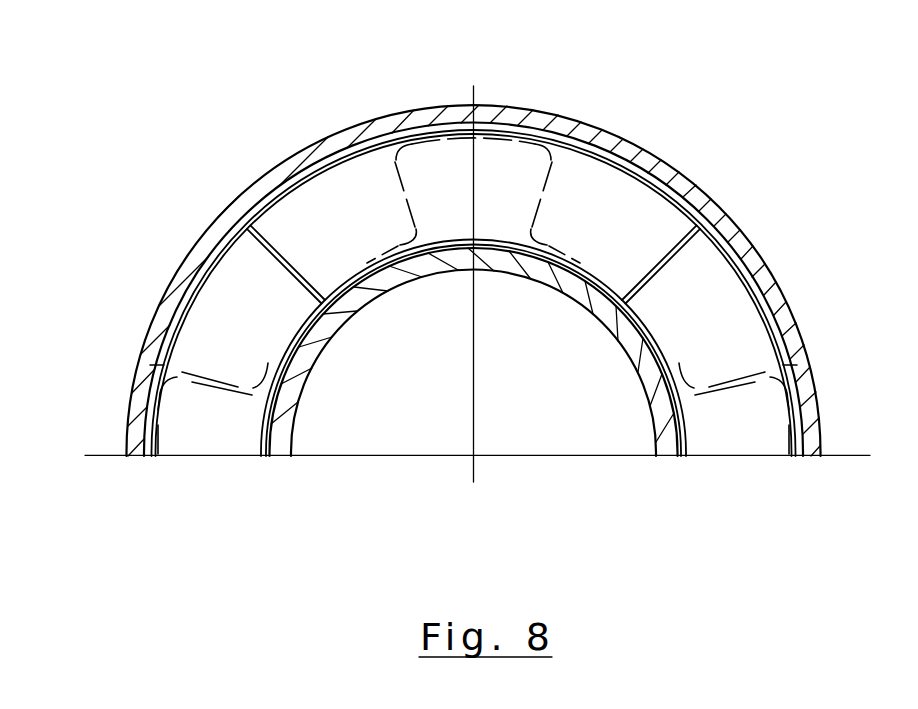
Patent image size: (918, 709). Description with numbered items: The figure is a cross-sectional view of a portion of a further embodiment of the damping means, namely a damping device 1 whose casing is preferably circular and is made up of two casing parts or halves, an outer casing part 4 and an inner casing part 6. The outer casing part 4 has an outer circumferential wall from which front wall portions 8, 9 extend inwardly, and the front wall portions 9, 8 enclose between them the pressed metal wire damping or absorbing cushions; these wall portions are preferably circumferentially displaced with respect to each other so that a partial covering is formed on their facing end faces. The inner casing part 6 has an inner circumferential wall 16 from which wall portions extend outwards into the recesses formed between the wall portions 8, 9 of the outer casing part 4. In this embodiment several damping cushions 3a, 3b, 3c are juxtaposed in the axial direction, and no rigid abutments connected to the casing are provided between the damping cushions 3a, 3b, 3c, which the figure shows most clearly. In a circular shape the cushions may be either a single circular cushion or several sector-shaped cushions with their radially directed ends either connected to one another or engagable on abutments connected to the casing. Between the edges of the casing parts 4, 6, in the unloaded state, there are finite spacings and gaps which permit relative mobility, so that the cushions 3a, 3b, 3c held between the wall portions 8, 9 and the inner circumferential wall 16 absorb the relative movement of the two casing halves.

The damping device 1 is at (124, 372).
The outer casing part 4 is at (583, 126).
The inner casing part 6 is at (474, 275).
The front wall portion 8 is at (233, 265).
The front wall portion 9 is at (372, 160).
The inner circumferential wall 16 is at (344, 318).
The damping cushion 3a is at (220, 324).
The damping cushion 3b is at (432, 188).
The damping cushion 3c is at (698, 339).